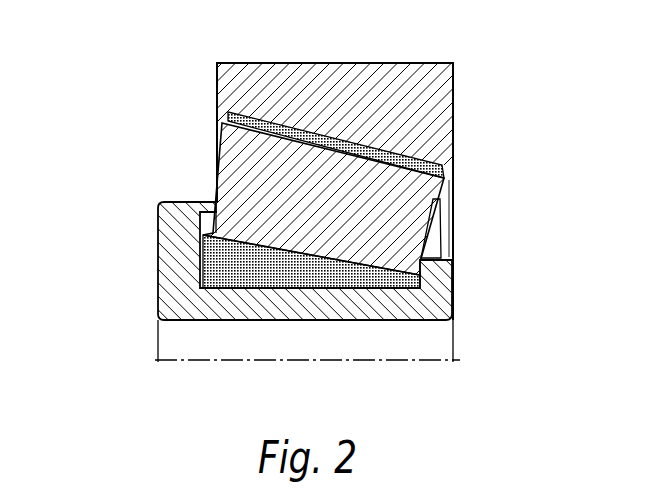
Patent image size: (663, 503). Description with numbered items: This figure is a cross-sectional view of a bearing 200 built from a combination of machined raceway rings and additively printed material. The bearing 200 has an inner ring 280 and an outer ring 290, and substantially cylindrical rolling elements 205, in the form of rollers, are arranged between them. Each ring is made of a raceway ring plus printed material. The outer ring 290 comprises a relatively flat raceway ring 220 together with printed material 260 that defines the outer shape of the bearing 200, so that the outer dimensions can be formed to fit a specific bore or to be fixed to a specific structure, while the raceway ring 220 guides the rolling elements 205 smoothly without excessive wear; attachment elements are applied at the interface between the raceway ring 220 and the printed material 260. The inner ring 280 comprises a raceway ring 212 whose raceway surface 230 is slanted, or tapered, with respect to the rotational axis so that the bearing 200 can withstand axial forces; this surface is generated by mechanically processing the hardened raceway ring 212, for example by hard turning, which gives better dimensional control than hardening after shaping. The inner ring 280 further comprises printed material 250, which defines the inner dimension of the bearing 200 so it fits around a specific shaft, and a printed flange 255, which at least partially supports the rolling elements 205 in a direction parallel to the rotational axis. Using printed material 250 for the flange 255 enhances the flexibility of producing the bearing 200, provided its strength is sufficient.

The bearing 200 is at (118, 75).
The outer ring 290 is at (207, 52).
The printed material 260 is at (432, 110).
The raceway ring 220 is at (402, 161).
The rolling elements 205 is at (247, 178).
The raceway ring 212 is at (242, 268).
The printed material 250 is at (433, 297).
The printed flange 255 is at (193, 222).
The raceway surface 230 is at (373, 265).
The inner ring 280 is at (144, 196).